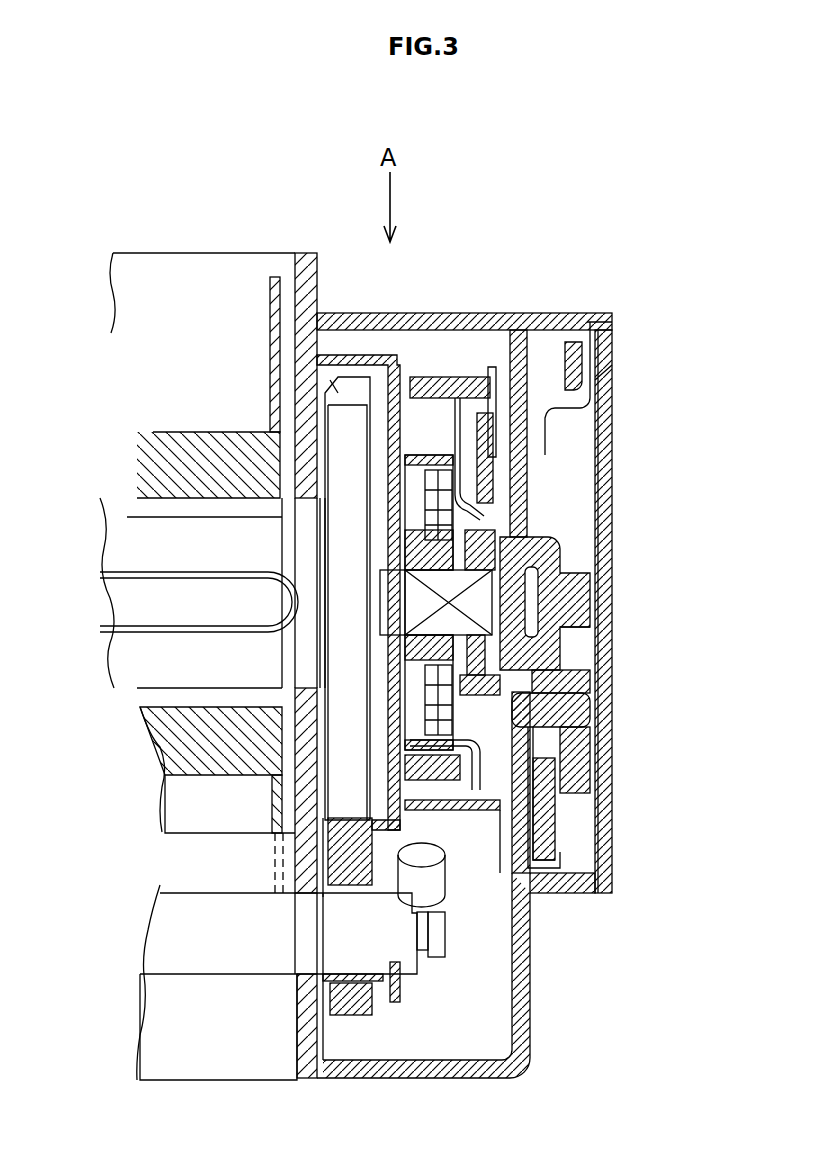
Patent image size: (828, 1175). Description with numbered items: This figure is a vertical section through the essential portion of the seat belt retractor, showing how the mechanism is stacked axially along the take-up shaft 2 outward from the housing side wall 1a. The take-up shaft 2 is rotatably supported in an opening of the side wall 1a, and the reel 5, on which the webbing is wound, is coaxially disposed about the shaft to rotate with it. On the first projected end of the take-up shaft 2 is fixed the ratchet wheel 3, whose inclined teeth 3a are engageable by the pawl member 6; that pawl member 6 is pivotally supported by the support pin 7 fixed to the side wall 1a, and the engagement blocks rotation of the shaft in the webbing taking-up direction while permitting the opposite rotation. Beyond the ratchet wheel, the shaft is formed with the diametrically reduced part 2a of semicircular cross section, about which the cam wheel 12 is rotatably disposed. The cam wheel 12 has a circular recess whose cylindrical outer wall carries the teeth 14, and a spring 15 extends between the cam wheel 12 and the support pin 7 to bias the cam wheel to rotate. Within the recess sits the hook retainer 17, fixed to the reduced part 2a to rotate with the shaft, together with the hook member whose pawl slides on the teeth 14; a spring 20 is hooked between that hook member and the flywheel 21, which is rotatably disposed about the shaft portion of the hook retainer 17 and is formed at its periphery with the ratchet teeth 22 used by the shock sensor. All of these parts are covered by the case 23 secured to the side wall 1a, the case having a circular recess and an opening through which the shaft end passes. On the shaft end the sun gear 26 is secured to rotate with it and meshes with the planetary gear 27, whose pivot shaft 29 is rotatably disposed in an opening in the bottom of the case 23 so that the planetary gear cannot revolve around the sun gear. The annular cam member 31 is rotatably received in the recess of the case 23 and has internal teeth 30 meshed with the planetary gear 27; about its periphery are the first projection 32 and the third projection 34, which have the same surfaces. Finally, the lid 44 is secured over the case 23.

The side wall 1a is at (310, 253).
The take-up shaft 2 is at (130, 555).
The diametrically reduced part 2a is at (492, 596).
The ratchet wheel 3 is at (357, 417).
The inclined teeth 3a is at (336, 385).
The reel 5 is at (215, 755).
The pawl member 6 is at (362, 1015).
The support pin 7 is at (295, 960).
The cam wheel 12 is at (400, 365).
The teeth 14 is at (440, 840).
The spring 15 is at (440, 960).
The hook retainer 17 is at (455, 810).
The spring 20 is at (490, 410).
The flywheel 21 is at (578, 715).
The ratchet teeth 22 is at (467, 377).
The case 23 is at (480, 1078).
The sun gear 26 is at (590, 612).
The planetary gear 27 is at (580, 770).
The pivot shaft 29 is at (575, 682).
The internal teeth 30 is at (583, 735).
The cam member 31 is at (590, 810).
The first projection 32 is at (578, 388).
The third projection 34 is at (578, 342).
The lid 44 is at (598, 420).